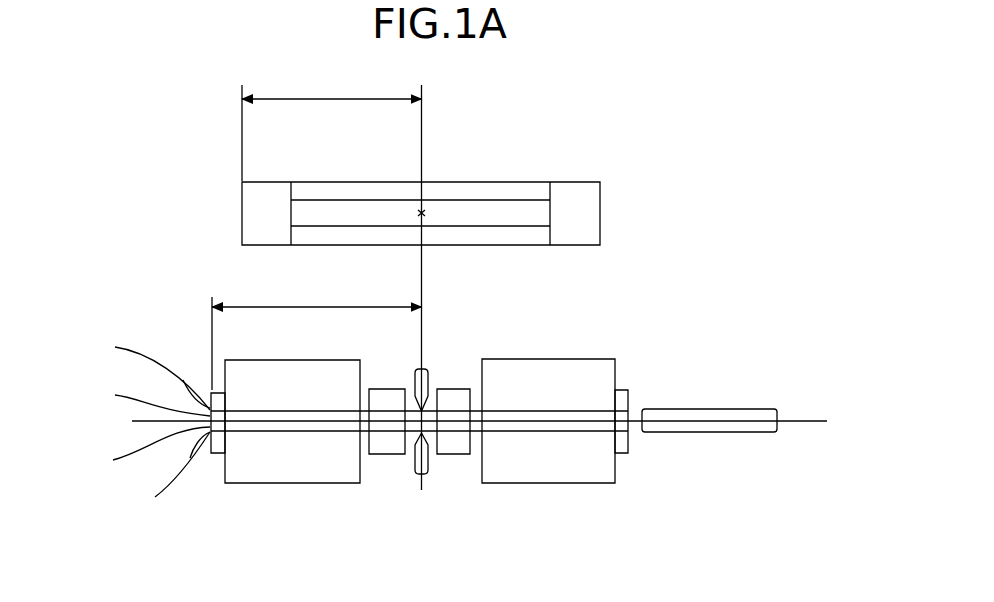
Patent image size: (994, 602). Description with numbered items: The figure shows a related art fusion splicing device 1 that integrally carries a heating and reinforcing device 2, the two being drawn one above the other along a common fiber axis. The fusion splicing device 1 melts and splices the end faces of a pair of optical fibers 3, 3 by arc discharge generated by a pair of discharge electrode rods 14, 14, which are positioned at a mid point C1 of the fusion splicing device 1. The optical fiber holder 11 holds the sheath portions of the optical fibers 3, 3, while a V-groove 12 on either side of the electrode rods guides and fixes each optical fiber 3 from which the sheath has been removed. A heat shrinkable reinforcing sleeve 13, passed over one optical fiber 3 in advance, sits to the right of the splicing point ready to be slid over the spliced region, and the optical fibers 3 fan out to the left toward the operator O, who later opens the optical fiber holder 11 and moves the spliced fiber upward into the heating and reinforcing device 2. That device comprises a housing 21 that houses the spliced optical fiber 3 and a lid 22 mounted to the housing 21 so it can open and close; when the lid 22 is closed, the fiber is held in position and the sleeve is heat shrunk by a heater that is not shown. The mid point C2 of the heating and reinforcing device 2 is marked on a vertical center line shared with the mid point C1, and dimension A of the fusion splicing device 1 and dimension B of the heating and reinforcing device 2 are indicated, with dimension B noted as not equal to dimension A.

The fusion splicing device 1 is at (445, 418).
The heating and reinforcing device 2 is at (444, 164).
The optical fiber 3 is at (313, 423).
The optical fiber holder 11 is at (270, 360).
The V-groove 12 is at (393, 425).
The heat shrinkable reinforcing sleeve 13 is at (707, 408).
The discharge electrode rod 14 is at (420, 406).
The housing 21 is at (328, 217).
The lid 22 is at (503, 187).
The mid point of the fusion splicing device C1 is at (423, 414).
The mid point of the heating and reinforcing device C2 is at (422, 214).
The operator O is at (187, 487).
The dimension A is at (317, 336).
The dimension B is at (332, 127).